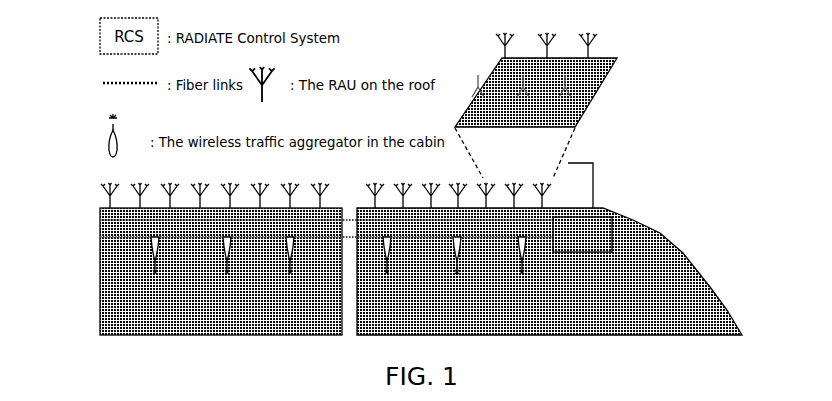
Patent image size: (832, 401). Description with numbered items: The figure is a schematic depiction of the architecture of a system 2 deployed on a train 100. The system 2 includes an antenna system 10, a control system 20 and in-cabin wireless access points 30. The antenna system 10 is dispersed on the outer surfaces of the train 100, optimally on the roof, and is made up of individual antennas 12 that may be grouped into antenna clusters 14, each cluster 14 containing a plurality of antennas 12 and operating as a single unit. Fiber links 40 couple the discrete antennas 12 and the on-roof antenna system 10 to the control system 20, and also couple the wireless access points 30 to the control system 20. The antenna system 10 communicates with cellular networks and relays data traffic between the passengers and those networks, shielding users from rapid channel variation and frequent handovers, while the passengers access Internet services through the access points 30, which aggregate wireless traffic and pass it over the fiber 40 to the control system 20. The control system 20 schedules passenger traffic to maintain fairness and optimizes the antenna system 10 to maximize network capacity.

The system 2 is at (583, 144).
The antenna system 10 is at (593, 183).
The antenna 12 is at (102, 196).
The antenna cluster 14 is at (603, 72).
The control system 20 is at (612, 230).
The wireless access point 30 is at (387, 272).
The fiber links 40 is at (160, 236).
The train 100 is at (712, 287).